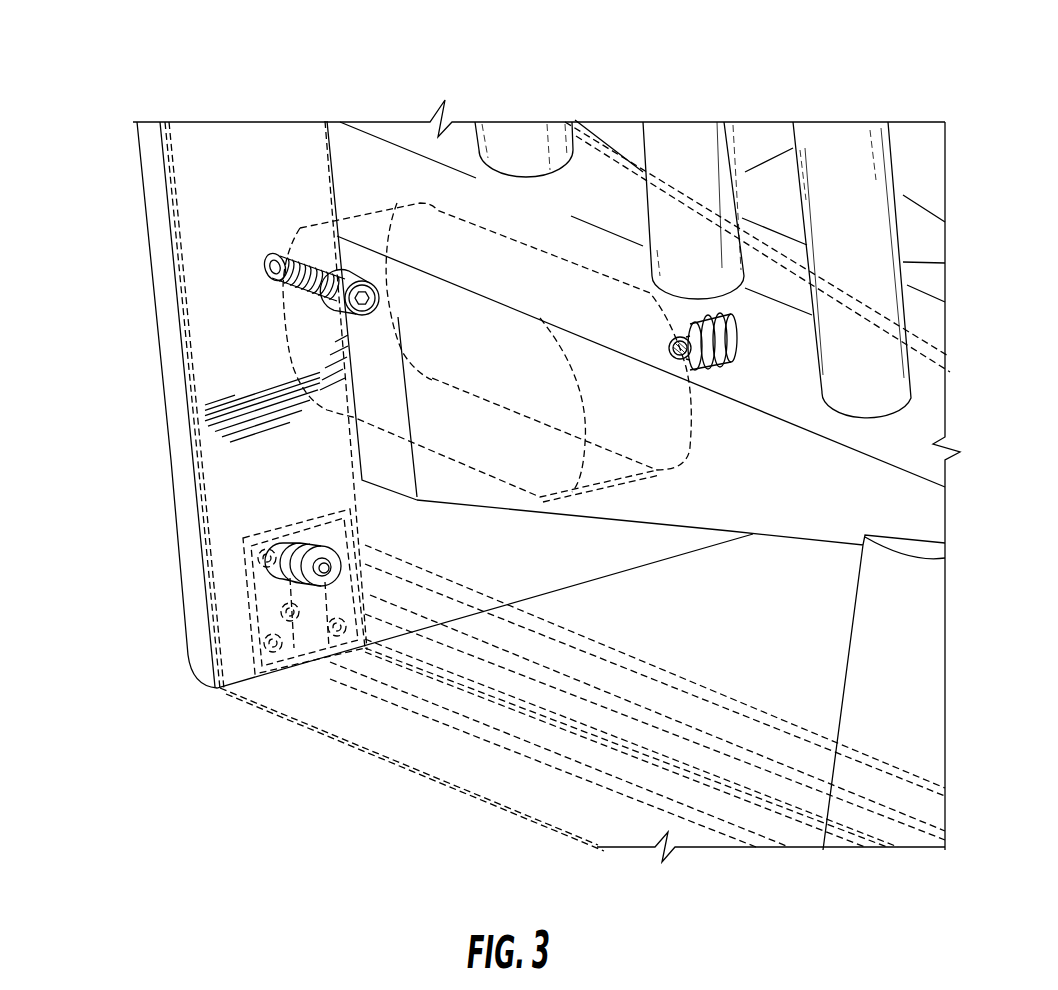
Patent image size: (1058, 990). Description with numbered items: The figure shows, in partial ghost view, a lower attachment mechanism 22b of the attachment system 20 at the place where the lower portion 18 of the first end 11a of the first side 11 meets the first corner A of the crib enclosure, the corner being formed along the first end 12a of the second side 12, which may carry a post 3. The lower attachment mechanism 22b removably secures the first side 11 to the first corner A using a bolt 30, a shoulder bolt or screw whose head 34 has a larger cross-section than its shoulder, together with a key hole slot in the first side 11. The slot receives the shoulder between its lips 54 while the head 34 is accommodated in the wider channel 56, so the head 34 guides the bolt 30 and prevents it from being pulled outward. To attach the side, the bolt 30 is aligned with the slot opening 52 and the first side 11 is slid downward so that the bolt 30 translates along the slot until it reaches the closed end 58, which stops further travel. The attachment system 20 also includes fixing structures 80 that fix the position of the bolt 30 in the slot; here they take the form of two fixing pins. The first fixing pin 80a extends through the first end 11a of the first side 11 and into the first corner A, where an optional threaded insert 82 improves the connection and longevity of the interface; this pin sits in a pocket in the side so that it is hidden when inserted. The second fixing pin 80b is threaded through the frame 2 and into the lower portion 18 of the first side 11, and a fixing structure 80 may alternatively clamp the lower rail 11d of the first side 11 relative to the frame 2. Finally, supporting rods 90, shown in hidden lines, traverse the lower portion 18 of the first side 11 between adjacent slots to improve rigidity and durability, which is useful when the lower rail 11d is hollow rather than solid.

The frame 2 is at (792, 358).
The post 3 is at (147, 122).
The first side 11 is at (388, 740).
The first end 11a is at (196, 419).
The lower rail 11d is at (462, 768).
The second side 12 is at (143, 192).
The first end of the second side 12a is at (163, 364).
The lower portion 18 is at (103, 320).
The attachment system 20 is at (95, 153).
The lower attachment mechanism 22b is at (215, 540).
The bolt 30 is at (305, 540).
The head 34 is at (321, 545).
The slot opening 52 is at (303, 660).
The lips 54 is at (263, 642).
The channel 56 is at (278, 612).
The closed end 58 is at (280, 532).
The fixing structure 80 is at (346, 268).
The first fixing pin 80a is at (322, 268).
The second fixing pin 80b is at (732, 333).
The threaded insert 82 is at (270, 252).
The supporting rods 90 is at (580, 783).
The first corner A is at (171, 119).